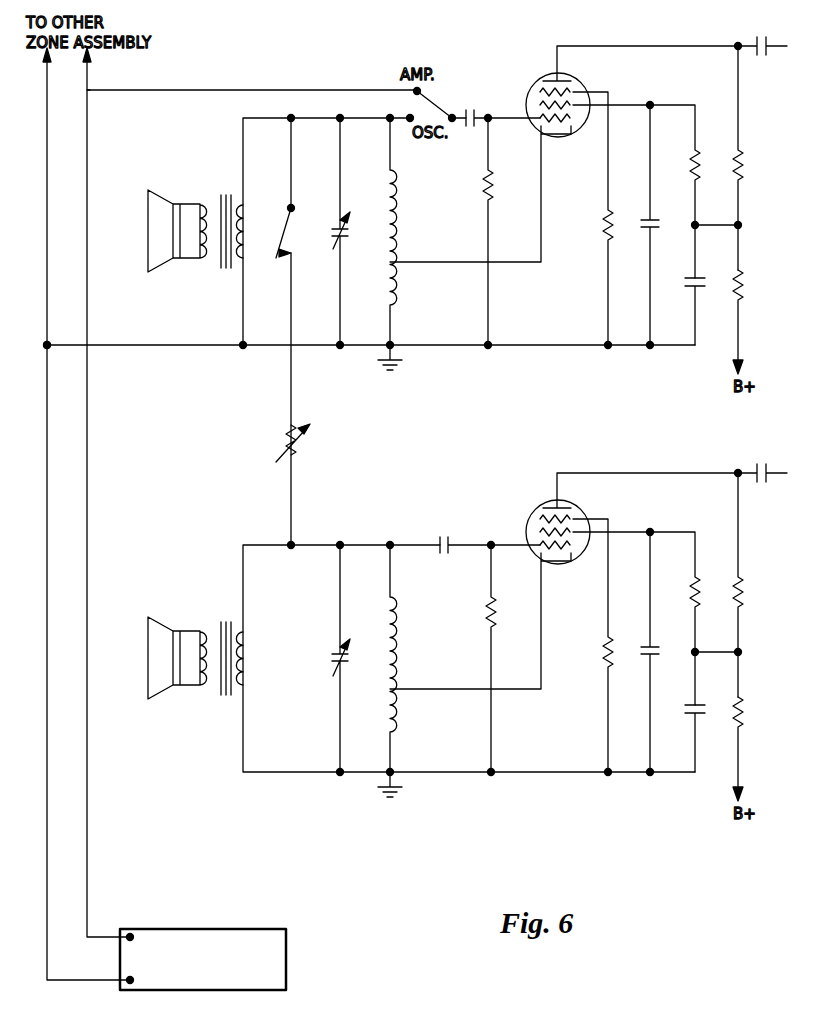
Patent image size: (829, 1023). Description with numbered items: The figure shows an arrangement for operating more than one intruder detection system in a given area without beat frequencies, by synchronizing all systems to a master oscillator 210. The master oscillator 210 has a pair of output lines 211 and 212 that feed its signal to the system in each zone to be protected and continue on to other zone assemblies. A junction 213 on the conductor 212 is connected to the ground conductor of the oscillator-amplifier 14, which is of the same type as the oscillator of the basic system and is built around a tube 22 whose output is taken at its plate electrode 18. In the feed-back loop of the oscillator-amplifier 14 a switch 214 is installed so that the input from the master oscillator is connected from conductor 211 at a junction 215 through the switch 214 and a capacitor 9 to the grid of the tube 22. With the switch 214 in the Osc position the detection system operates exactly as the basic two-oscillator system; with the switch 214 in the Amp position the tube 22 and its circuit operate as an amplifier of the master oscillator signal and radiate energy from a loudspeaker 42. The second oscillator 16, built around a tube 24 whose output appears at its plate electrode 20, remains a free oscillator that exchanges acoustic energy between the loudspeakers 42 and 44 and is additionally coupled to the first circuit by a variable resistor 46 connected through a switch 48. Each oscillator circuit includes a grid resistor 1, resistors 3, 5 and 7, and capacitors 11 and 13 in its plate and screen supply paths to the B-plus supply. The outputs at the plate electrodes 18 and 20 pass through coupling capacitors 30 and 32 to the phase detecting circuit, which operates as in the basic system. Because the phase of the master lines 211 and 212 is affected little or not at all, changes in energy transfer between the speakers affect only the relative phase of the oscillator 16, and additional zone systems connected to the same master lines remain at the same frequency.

The junction 215 is at (87, 90).
The junction 213 is at (47, 345).
The switch 214 is at (415, 101).
The capacitor 9 is at (466, 128).
The resistor 1 is at (493, 186).
The oscillator-amplifier 14 is at (527, 76).
The plate electrode 18 is at (562, 80).
The oscillator tube 22 is at (527, 106).
The oscillator 16 is at (527, 503).
The plate electrode 20 is at (562, 507).
The oscillator tube 24 is at (527, 533).
The resistor 3 is at (699, 166).
The resistor 5 is at (742, 166).
The resistor 7 is at (743, 290).
The capacitor 11 is at (653, 217).
The capacitor 13 is at (692, 290).
The coupling capacitor 30 is at (768, 44).
The coupling capacitor 32 is at (768, 471).
The loudspeaker 42 is at (168, 265).
The loudspeaker 44 is at (168, 692).
The variable resistor 46 is at (303, 447).
The switch 48 is at (283, 230).
The master oscillator 210 is at (250, 930).
The output line 211 is at (108, 936).
The output line 212 is at (55, 982).